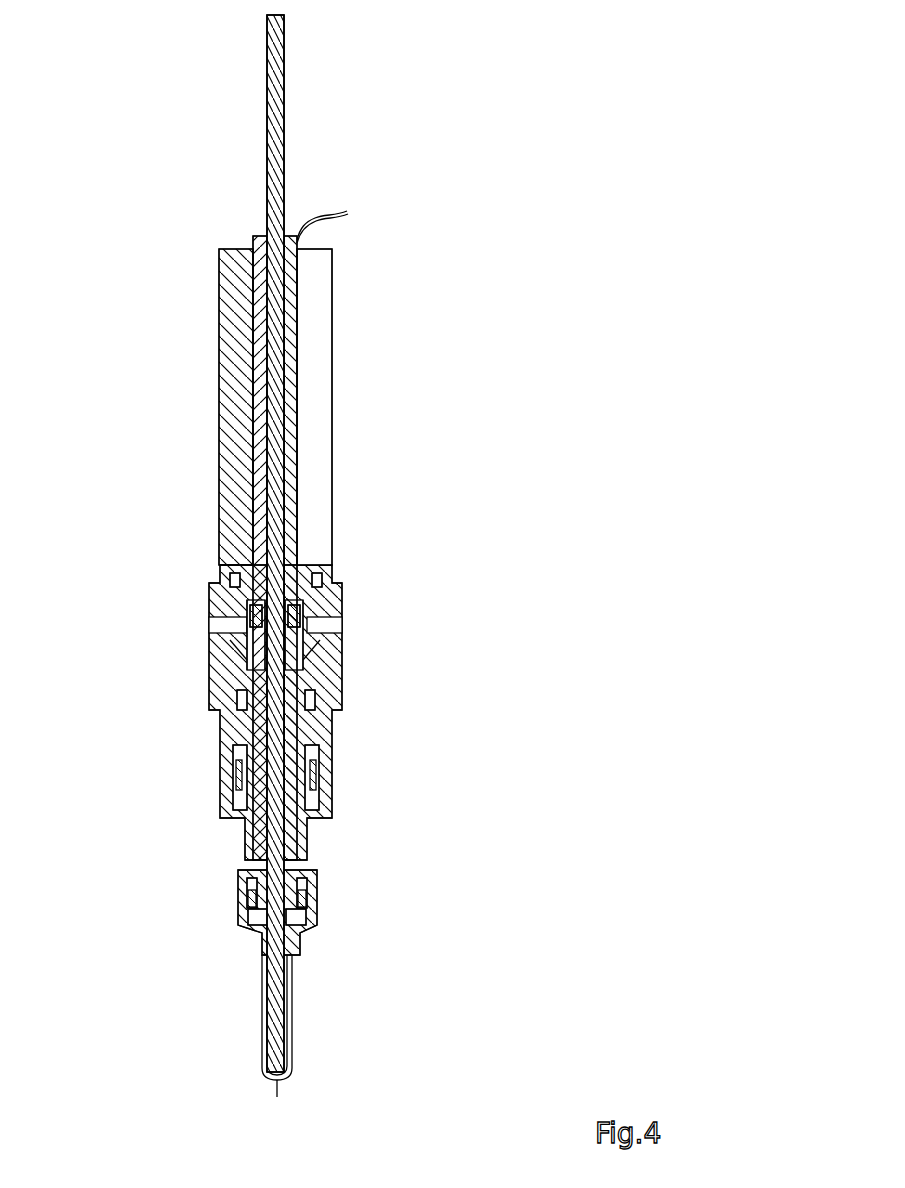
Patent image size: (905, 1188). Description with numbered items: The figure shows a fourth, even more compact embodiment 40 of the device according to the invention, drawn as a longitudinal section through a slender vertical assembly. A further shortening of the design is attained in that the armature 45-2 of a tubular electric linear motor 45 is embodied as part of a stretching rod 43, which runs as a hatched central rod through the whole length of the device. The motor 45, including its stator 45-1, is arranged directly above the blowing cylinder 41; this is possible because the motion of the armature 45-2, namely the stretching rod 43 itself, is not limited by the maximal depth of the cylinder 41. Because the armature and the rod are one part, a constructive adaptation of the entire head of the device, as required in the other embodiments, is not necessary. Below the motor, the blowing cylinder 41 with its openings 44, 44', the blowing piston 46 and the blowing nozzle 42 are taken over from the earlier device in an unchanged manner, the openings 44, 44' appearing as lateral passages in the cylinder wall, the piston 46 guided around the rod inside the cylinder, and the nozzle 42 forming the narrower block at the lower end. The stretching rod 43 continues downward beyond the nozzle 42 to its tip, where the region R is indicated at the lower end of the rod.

The fourth embodiment 40 is at (463, 115).
The blowing cylinder 41 is at (284, 712).
The blowing nozzle 42 is at (240, 912).
The stretching rod 43 is at (280, 388).
The opening 44 is at (189, 621).
The opening 44' is at (370, 621).
The tubular electric linear motor 45 is at (172, 402).
The stator 45-1 is at (255, 277).
The armature 45-2 is at (300, 535).
The blowing piston 46 is at (300, 773).
The tip / region R is at (292, 1048).